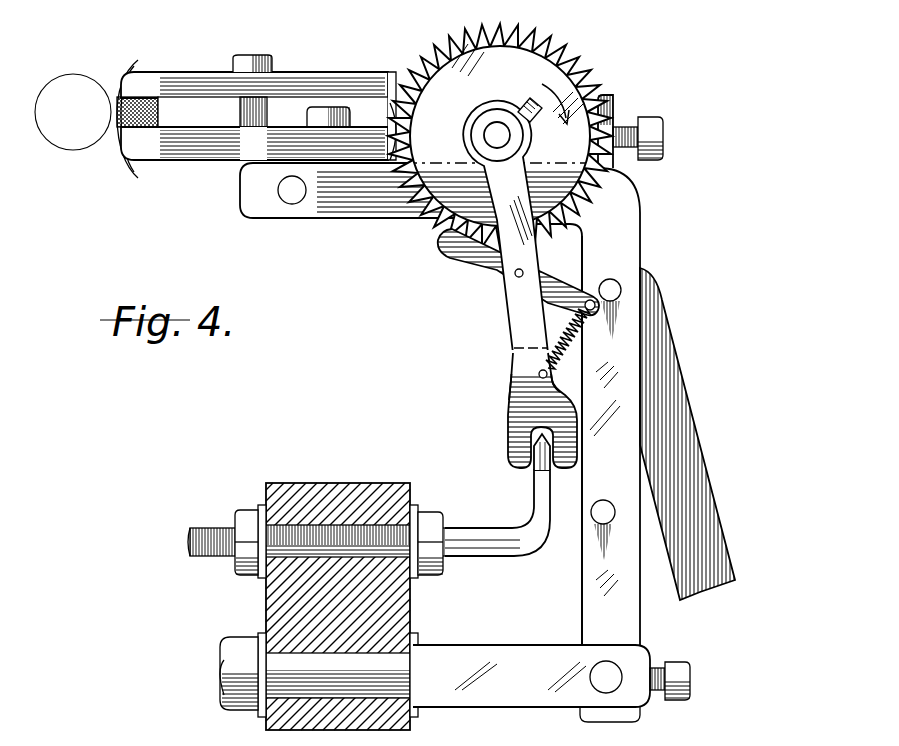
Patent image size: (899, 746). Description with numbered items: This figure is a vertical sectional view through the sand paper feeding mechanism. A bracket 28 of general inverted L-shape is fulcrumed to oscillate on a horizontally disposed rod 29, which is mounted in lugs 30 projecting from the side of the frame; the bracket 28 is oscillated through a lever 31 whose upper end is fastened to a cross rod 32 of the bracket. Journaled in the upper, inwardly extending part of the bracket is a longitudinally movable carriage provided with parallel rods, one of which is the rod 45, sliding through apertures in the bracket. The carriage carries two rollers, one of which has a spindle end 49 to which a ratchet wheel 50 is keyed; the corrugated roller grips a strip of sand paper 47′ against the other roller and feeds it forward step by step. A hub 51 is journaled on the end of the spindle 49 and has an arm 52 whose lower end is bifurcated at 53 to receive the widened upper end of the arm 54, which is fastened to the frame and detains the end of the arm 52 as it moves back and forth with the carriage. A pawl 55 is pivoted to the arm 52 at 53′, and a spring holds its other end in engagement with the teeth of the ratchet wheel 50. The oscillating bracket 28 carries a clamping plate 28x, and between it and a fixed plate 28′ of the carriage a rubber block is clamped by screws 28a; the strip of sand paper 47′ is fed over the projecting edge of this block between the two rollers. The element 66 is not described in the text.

The bracket 28 is at (598, 372).
The fixed plate 28′ is at (254, 143).
The screws 28a is at (273, 113).
The clamping plate 28x is at (207, 84).
The horizontally disposed rod 29 is at (607, 692).
The lugs 30 is at (551, 683).
The lever 31 is at (683, 386).
The cross rod 32 is at (607, 300).
The parallel rod 45 is at (296, 196).
The strip of sand paper 47′ is at (119, 107).
The spindle end 49 is at (501, 130).
The ratchet wheel 50 is at (545, 50).
The hub 51 is at (483, 122).
The arm 52 is at (513, 327).
The bifurcated lower end 53 is at (510, 438).
The pivot 53′ is at (515, 277).
The arm 54 is at (532, 478).
The pawl 55 is at (480, 260).
The spring 66 is at (584, 333).